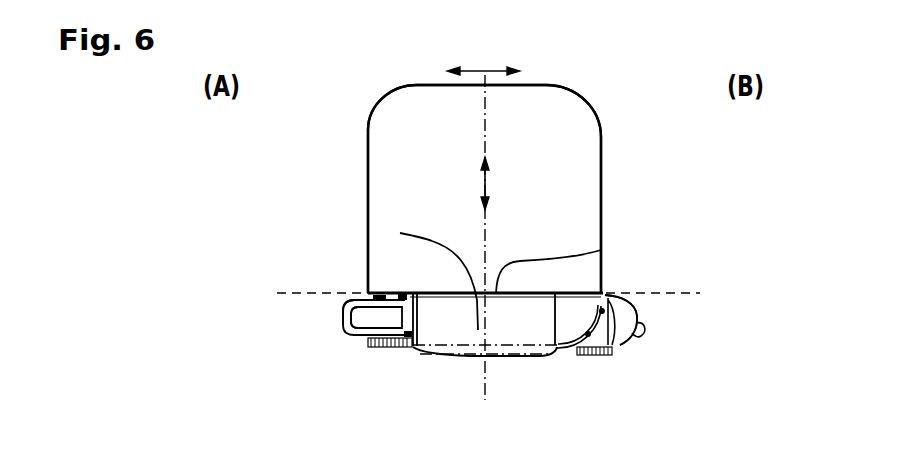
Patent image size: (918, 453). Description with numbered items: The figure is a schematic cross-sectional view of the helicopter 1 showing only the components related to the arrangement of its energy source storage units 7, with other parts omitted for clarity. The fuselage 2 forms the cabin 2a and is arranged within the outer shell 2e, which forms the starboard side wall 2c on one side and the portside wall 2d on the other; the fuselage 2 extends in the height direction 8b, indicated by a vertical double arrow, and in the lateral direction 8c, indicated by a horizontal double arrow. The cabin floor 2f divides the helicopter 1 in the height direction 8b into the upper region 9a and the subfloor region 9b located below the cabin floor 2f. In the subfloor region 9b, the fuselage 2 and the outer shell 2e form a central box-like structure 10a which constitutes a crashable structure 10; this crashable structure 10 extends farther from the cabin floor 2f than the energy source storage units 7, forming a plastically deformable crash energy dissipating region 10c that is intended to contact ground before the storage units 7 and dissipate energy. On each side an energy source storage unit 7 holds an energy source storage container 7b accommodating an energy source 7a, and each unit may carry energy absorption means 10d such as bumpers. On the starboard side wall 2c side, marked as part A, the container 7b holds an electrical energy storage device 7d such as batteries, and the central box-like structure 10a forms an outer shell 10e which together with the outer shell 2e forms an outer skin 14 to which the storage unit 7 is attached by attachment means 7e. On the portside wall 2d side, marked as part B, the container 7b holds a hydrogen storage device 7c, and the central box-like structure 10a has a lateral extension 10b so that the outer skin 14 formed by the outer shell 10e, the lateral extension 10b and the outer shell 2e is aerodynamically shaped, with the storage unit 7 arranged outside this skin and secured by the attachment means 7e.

The helicopter 1 is at (344, 105).
The fuselage 2 is at (604, 150).
The cabin 2a is at (541, 166).
The starboard side wall 2c is at (367, 176).
The portside wall 2d is at (604, 208).
The outer shell 2e is at (599, 111).
The cabin floor 2f is at (601, 251).
The energy source storage unit 7 is at (323, 323).
The energy source 7a is at (338, 310).
The energy source storage container 7b is at (340, 325).
The hydrogen storage device 7c is at (641, 338).
The electrical energy storage device 7d is at (366, 322).
The attachment means 7e is at (403, 295).
The height direction 8b is at (483, 178).
The lateral direction 8c is at (485, 70).
The upper region 9a is at (694, 168).
The subfloor region 9b is at (746, 340).
The crashable structure 10 is at (523, 358).
The central box-like structure 10a is at (458, 333).
The lateral extension 10b is at (573, 300).
The crash energy dissipating region 10c is at (486, 390).
The energy absorption means 10d is at (383, 348).
The outer shell of the central box-like structure 10e is at (400, 233).
The outer skin 14 is at (367, 152).